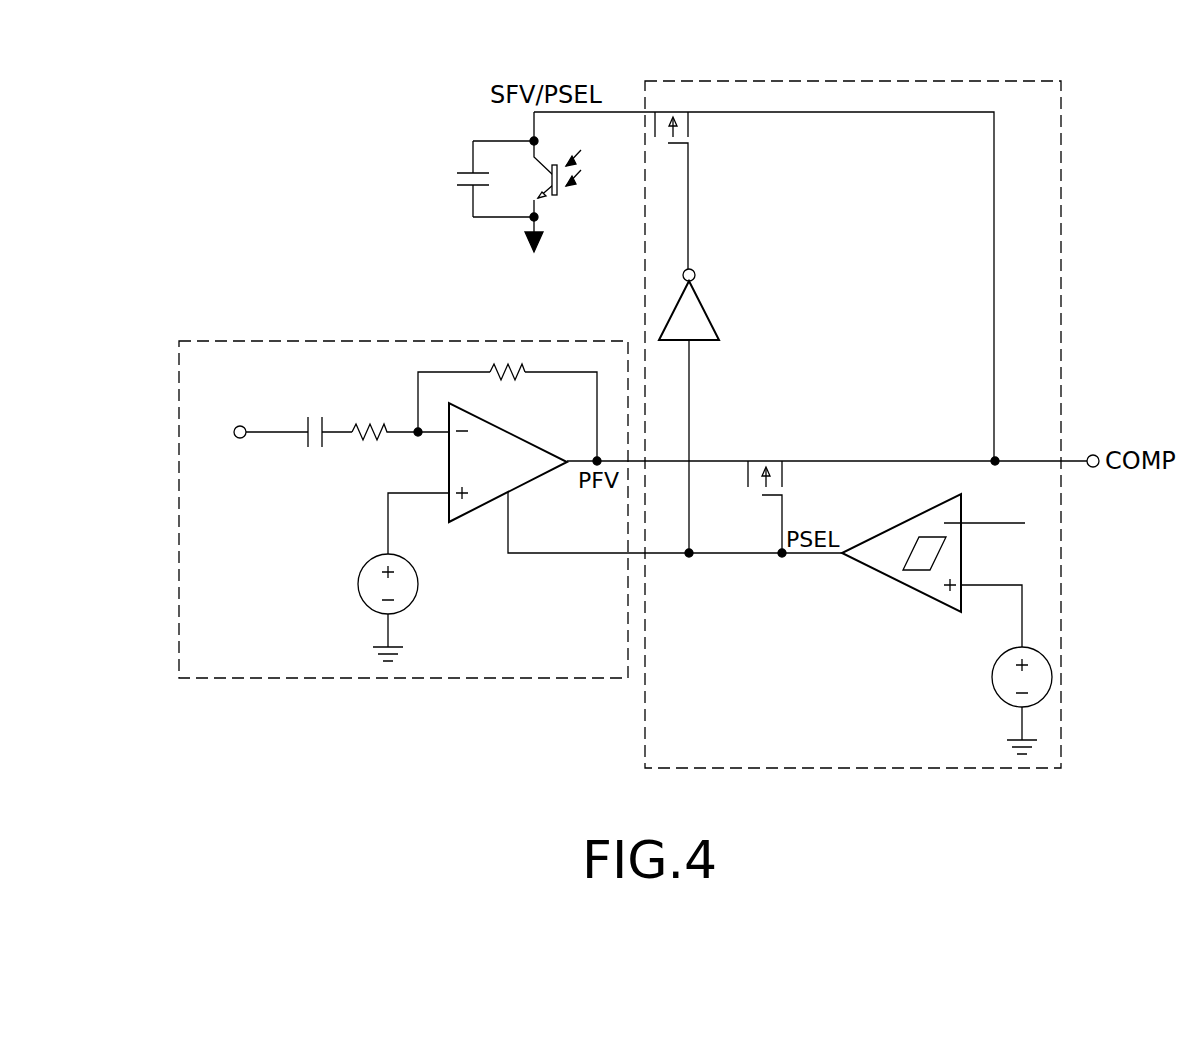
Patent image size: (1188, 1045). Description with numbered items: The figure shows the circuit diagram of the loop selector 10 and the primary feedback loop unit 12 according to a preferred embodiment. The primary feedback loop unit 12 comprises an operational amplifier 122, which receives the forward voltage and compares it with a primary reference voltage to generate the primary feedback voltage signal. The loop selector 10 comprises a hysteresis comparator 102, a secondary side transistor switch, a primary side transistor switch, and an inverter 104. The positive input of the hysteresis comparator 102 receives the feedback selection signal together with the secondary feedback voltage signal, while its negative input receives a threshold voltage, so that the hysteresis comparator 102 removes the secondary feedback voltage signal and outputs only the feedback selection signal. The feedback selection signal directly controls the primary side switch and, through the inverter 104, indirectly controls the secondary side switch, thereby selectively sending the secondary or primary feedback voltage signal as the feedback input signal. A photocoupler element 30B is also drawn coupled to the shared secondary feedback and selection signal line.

The loop selector 10 is at (853, 86).
The primary feedback loop unit 12 is at (403, 345).
The photocoupler / phototransistor 30B is at (465, 158).
The hysteresis comparator 102 is at (895, 576).
The inverter 104 is at (705, 311).
The operational amplifier 122 is at (476, 506).